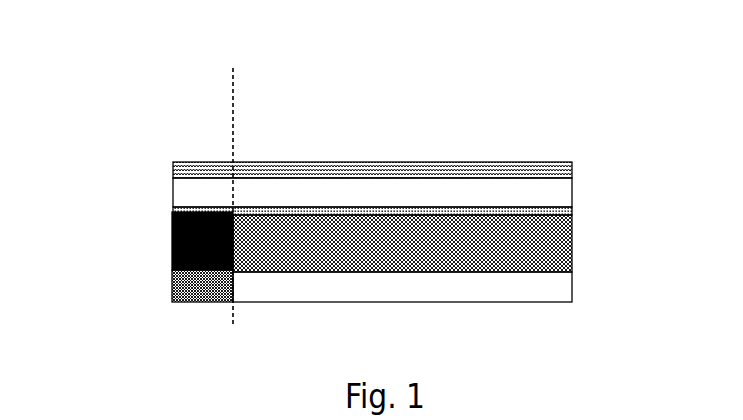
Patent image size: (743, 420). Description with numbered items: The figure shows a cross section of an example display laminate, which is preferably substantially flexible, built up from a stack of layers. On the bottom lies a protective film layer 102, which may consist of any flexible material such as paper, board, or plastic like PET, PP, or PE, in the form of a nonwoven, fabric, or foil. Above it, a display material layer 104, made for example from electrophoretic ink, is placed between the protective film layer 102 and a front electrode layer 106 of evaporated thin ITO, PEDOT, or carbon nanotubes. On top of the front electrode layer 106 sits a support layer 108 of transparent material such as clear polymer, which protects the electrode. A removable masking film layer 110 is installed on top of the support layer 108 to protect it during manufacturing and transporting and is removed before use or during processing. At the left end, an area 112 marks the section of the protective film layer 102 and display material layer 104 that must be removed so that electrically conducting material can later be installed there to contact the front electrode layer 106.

The protective film layer 102 is at (497, 303).
The display material layer 104 is at (570, 265).
The front electrode layer 106 is at (568, 233).
The support layer 108 is at (550, 197).
The masking film layer 110 is at (535, 163).
The area 112 is at (173, 240).